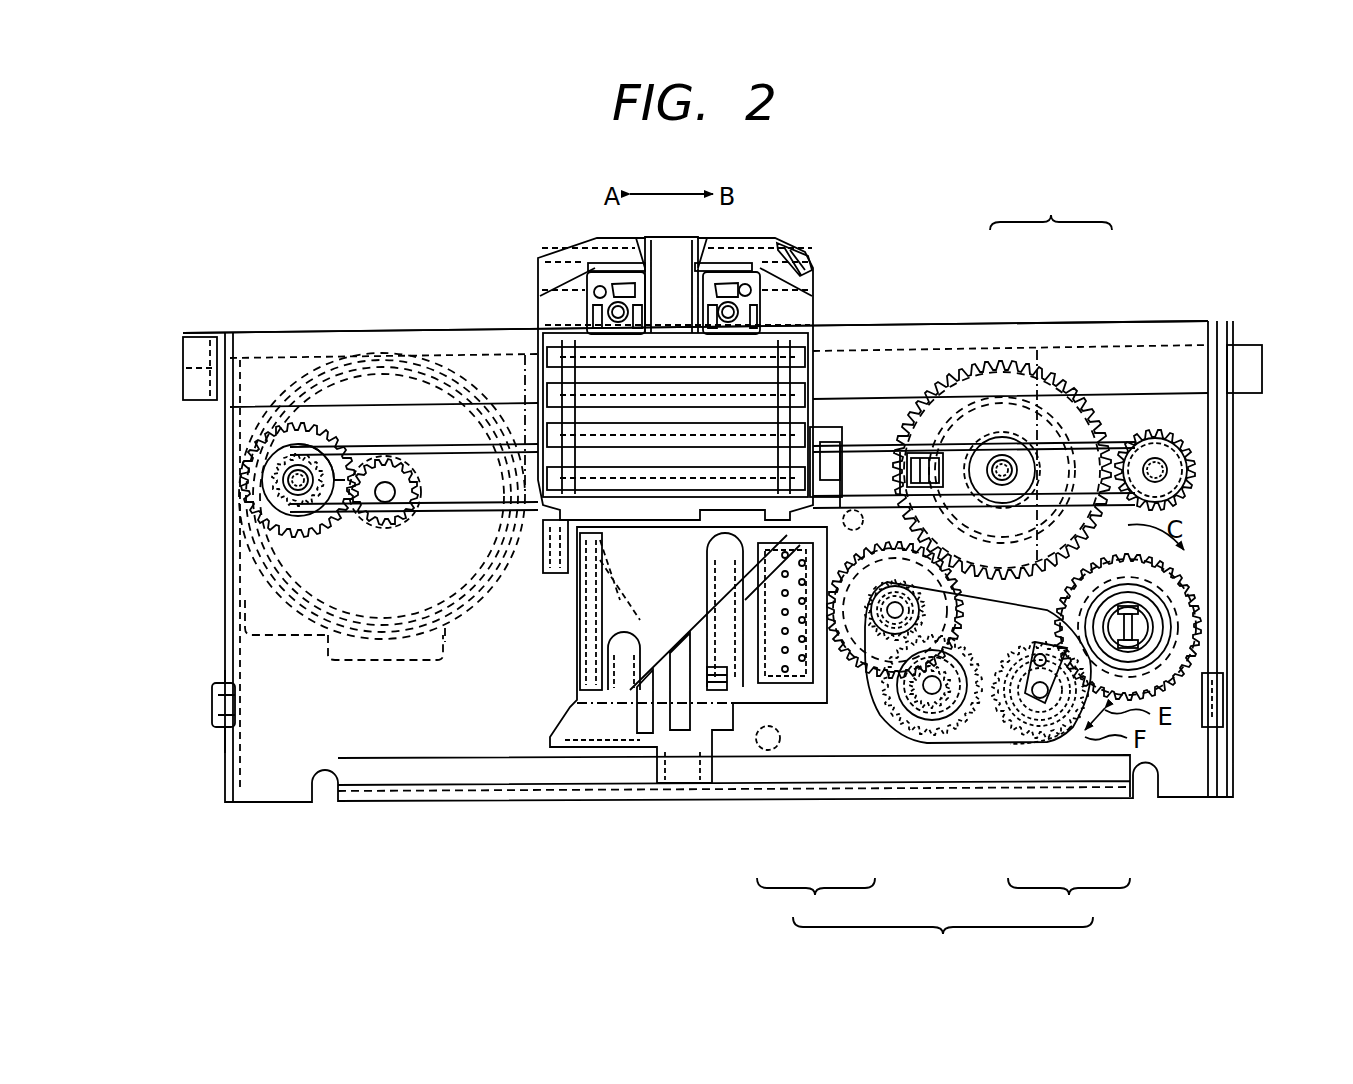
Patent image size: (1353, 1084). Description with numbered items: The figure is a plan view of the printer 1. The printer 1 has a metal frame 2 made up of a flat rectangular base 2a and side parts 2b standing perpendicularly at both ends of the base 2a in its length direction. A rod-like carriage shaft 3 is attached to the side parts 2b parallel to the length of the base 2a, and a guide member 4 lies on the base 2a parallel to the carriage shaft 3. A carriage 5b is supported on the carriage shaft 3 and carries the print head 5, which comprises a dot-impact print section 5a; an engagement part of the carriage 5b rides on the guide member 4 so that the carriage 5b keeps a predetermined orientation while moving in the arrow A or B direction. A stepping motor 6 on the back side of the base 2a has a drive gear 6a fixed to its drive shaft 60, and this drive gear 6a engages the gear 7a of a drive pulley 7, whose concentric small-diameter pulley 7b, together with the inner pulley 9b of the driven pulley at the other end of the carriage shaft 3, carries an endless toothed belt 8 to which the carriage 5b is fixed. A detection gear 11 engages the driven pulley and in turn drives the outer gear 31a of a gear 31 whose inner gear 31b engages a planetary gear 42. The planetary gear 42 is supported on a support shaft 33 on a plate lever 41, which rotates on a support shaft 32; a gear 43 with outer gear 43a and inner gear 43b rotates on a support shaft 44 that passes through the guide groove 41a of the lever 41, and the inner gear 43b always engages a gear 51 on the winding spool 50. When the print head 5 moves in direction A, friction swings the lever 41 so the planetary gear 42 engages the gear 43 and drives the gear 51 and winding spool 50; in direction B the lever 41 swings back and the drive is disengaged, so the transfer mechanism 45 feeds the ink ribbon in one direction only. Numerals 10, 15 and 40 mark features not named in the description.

The printer 1 is at (184, 231).
The frame 2 is at (1248, 562).
The base 2a is at (290, 750).
The side parts 2b is at (219, 556).
The carriage shaft 3 is at (878, 355).
The guide member 4 is at (481, 770).
The print head 5 is at (808, 246).
The dot-impact print section 5a is at (757, 246).
The carriage 5b is at (833, 422).
The stepping motor 6 is at (482, 372).
The drive gear 6a is at (387, 488).
The drive pulley 7 is at (330, 424).
The gear 7a is at (295, 424).
The small-diameter pulley 7b is at (268, 505).
The endless toothed belt 8 is at (882, 434).
The inner pulley 9b is at (1192, 448).
The drive unit 10 is at (1051, 209).
The detection gear 11 is at (1097, 400).
The switch 15 is at (925, 455).
The gear 31 is at (816, 900).
The outer gear 31a is at (832, 742).
The inner gear 31b is at (866, 746).
The support shaft 32 is at (895, 640).
The support shaft 33 is at (933, 700).
The arm end 40 is at (1080, 752).
The plate lever 41 is at (1000, 746).
The guide groove 41a is at (1038, 650).
The planetary gear 42 is at (1000, 742).
The gear 43 is at (1069, 900).
The outer gear 43a is at (1065, 790).
The inner gear 43b is at (1040, 790).
The support shaft 44 is at (1026, 680).
The transfer mechanism 45 is at (943, 940).
The winding spool 50 is at (1142, 629).
The gear 51 is at (1197, 606).
The drive shaft 60 is at (407, 478).